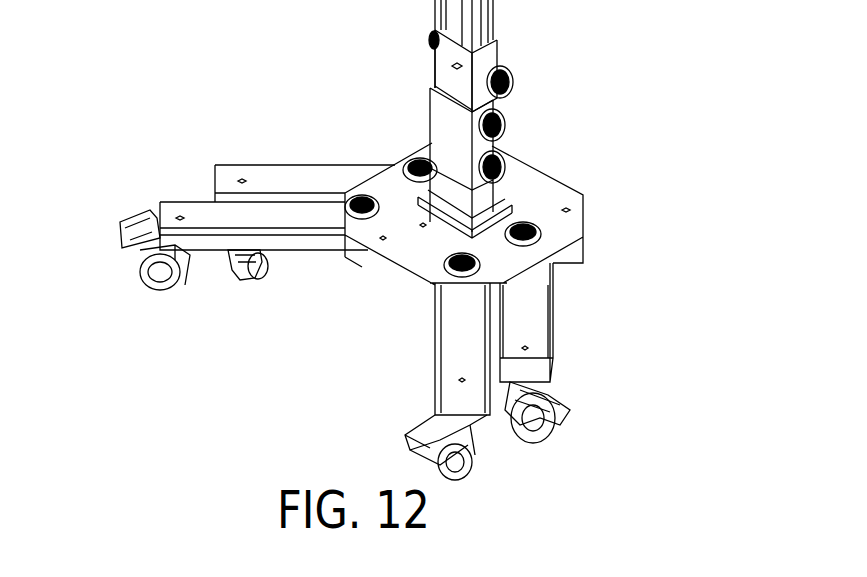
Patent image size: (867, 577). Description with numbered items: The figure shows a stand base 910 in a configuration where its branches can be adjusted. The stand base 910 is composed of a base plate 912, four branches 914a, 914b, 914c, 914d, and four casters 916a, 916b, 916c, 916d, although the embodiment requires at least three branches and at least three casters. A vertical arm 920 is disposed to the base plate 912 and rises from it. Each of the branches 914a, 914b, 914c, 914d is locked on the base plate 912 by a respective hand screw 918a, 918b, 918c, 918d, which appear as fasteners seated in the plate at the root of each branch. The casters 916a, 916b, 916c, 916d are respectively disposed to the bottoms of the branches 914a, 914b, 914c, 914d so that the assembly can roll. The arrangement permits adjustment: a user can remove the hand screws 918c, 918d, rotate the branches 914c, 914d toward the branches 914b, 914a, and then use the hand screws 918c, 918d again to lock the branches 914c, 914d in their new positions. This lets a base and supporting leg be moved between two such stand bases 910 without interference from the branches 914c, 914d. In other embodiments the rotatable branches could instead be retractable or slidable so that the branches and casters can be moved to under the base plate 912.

The stand base 910 is at (652, 172).
The base plate 912 is at (583, 211).
The branch 914a is at (160, 203).
The branch 914b is at (437, 340).
The branch 914c is at (553, 320).
The branch 914d is at (217, 170).
The caster 916a is at (150, 278).
The caster 916b is at (430, 425).
The caster 916c is at (558, 399).
The caster 916d is at (243, 278).
The hand screw 918a is at (360, 196).
The hand screw 918b is at (452, 270).
The hand screw 918c is at (525, 222).
The hand screw 918d is at (418, 160).
The vertical arm 920 is at (492, 11).